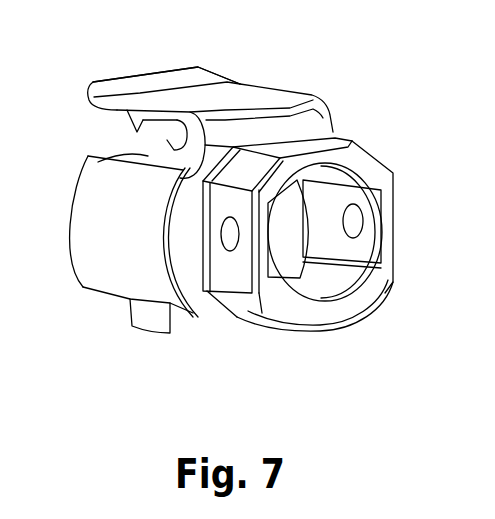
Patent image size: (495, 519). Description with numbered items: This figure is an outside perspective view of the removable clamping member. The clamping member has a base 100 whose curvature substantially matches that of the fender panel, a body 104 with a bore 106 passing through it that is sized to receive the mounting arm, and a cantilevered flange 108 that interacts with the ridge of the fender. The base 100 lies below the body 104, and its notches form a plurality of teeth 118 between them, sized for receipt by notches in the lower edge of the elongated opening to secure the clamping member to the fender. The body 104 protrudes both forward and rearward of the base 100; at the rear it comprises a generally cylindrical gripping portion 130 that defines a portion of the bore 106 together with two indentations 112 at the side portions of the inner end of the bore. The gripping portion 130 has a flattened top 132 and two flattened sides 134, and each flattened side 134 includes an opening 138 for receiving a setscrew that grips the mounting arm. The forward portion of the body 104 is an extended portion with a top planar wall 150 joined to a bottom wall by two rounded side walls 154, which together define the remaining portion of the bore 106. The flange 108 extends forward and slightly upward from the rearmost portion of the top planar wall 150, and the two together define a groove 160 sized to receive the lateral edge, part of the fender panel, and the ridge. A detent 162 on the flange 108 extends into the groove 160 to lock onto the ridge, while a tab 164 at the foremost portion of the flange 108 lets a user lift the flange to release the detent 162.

The base 100 is at (224, 219).
The body 104 is at (224, 247).
The bore 106 is at (300, 232).
The cantilevered flange 108 is at (230, 72).
The indentations 112 is at (287, 268).
The teeth 118 is at (158, 322).
The gripping portion 130 is at (310, 240).
The flattened top 132 is at (327, 142).
The flattened sides 134 is at (233, 284).
The opening 138 is at (222, 248).
The top planar wall 150 is at (168, 113).
The rounded side walls 154 is at (87, 218).
The groove 160 is at (168, 139).
The detent 162 is at (134, 129).
The tab 164 is at (121, 83).